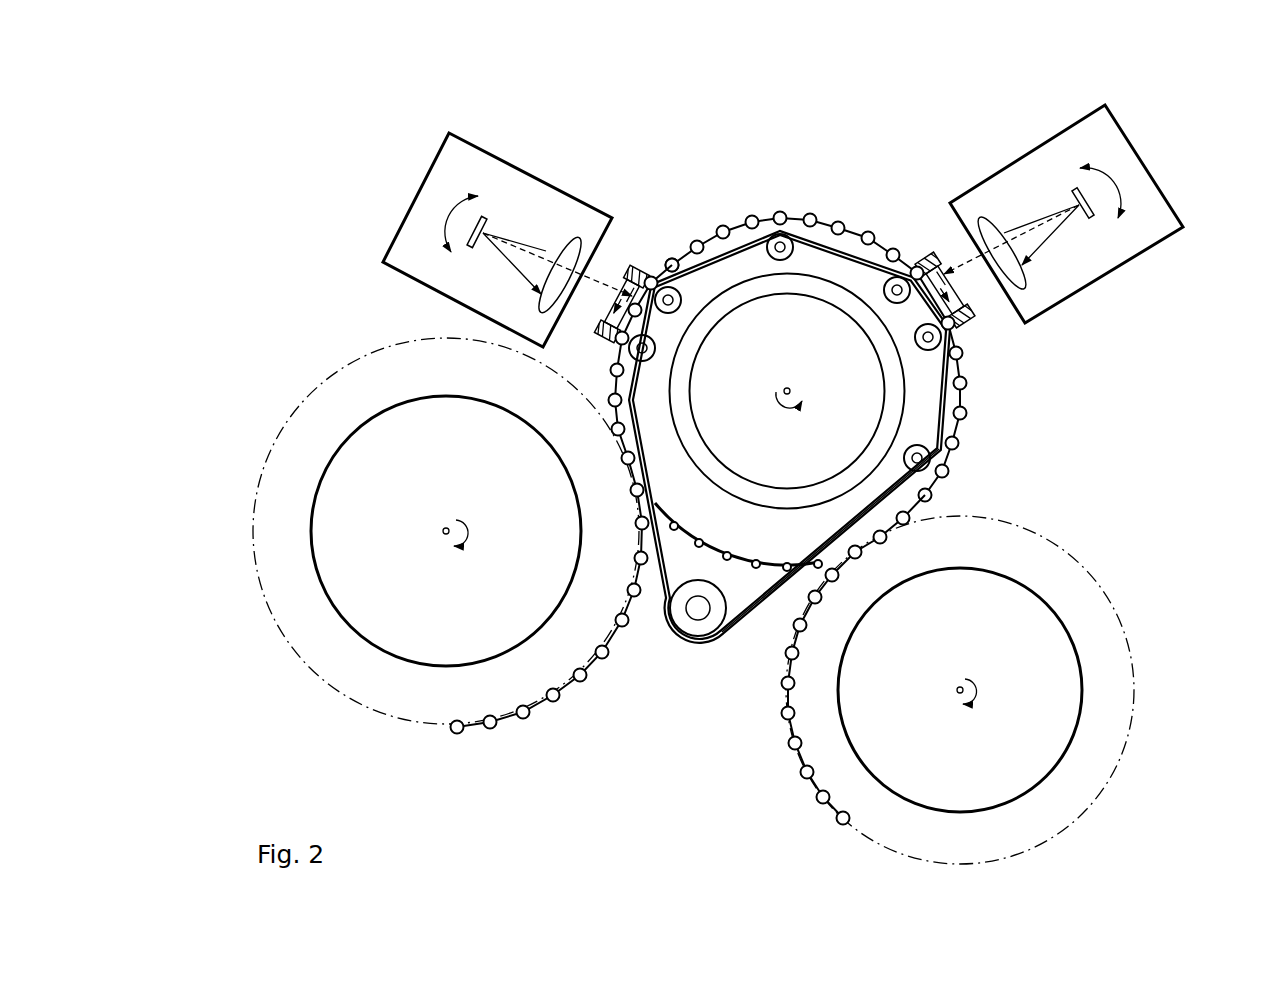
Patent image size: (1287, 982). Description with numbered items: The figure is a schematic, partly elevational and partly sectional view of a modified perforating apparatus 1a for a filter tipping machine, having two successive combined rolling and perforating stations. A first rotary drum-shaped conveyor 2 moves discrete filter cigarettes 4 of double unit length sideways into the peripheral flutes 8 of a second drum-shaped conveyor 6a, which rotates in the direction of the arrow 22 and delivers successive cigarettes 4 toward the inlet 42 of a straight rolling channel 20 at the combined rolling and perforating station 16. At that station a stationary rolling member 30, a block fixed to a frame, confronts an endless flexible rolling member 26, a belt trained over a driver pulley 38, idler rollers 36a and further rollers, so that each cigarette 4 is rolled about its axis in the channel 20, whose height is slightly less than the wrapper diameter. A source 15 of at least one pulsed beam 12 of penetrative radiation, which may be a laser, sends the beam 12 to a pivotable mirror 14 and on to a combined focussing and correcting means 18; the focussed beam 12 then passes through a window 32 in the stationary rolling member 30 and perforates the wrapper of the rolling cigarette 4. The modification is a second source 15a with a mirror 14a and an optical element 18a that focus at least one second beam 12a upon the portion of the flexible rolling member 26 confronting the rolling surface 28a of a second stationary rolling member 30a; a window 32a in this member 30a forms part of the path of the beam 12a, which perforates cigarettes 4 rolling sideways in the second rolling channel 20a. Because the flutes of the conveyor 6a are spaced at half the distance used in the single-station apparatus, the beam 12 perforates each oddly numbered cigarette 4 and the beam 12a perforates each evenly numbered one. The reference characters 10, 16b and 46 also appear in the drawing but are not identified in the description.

The modified perforating apparatus 1a is at (673, 712).
The first rotary drum-shaped conveyor 2 is at (1052, 566).
The filter cigarette 4 is at (554, 693).
The conveyor 6a is at (828, 217).
The peripheral flutes 8 is at (765, 570).
The drum 10 is at (442, 690).
The pulsed beam of penetrative radiation 12 is at (1050, 238).
The second beam of penetrative radiation 12a is at (517, 257).
The pivotable mirror 14 is at (1080, 203).
The mirror 14a is at (486, 222).
The source of pulsed beam 15 is at (1166, 152).
The second source of penetrative radiation 15a is at (397, 190).
The combined rolling and perforating station 16 is at (965, 282).
The housing 16b is at (604, 296).
The combined focussing and correcting means 18 is at (1028, 283).
The optical element 18a is at (578, 245).
The rolling channel 20 is at (931, 267).
The second rolling channel 20a is at (676, 260).
The arrow 22 is at (933, 458).
The flexible rolling member 26 is at (906, 500).
The rolling surface 28a is at (607, 396).
The stationary rolling member 30 is at (910, 264).
The second stationary rolling member 30a is at (645, 262).
The window 32 is at (945, 292).
The window 32a is at (606, 326).
The idler rollers 36a is at (772, 238).
The driver pulley 38 is at (692, 637).
The inlet of rolling channel 42 is at (957, 334).
The chain ball 46 is at (884, 262).